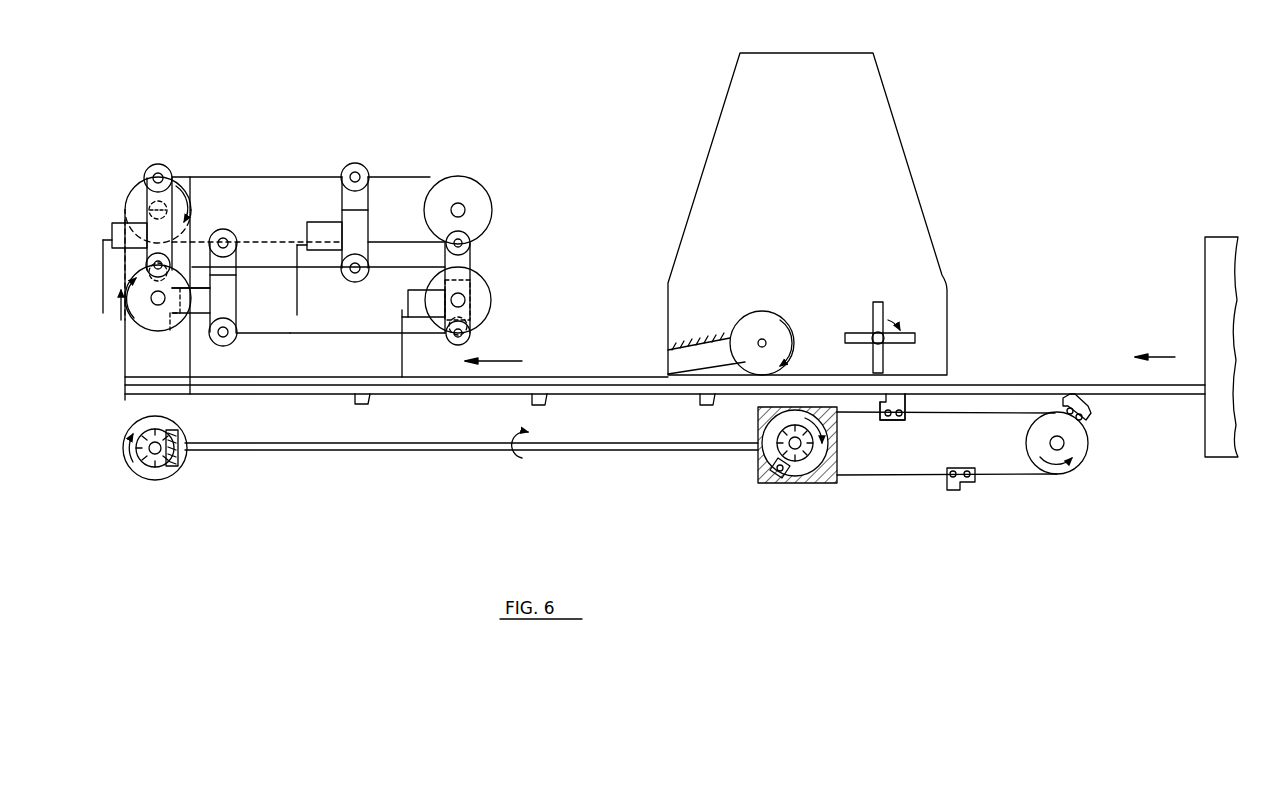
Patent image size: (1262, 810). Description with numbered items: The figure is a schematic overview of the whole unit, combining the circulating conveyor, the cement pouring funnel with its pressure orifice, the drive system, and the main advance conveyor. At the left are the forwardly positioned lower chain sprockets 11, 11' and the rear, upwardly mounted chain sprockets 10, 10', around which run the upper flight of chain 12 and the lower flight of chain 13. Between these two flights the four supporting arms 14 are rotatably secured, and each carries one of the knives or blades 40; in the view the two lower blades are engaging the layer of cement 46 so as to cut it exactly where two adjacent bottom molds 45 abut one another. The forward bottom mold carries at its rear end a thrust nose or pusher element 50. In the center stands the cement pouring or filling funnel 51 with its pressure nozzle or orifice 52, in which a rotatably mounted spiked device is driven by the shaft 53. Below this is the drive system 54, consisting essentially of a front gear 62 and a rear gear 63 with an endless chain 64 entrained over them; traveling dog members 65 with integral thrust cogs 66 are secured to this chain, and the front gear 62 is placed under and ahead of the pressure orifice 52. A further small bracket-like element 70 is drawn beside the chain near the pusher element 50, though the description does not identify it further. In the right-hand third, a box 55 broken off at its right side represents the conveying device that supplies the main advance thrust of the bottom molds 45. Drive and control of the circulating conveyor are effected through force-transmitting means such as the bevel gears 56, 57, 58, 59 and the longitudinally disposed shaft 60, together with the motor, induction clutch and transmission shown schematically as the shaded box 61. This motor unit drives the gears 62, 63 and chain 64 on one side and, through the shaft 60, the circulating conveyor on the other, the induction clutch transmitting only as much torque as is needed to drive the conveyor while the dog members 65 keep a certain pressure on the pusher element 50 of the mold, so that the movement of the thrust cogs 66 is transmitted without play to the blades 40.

The rear upwardly mounted chain sprocket 10 is at (165, 214).
The rear upwardly mounted chain sprocket 10' is at (487, 226).
The forwardly positioned lower chain sprocket 11 is at (167, 307).
The forwardly positioned lower chain sprocket 11' is at (439, 303).
The upper flight of chain 12 is at (280, 172).
The lower flight of chain 13 is at (355, 336).
The supporting arm 14 is at (237, 302).
The knife or blade 40 is at (170, 368).
The bottom mold 45 is at (603, 392).
The layer of cement 46 is at (540, 381).
The thrust nose or pusher element 50 is at (370, 405).
The cement pouring or filling funnel 51 is at (898, 130).
The pressure nozzle or orifice 52 is at (675, 362).
The shaft 53 is at (873, 330).
The drive system 54 is at (910, 484).
The box 55 is at (1218, 292).
The bevel gear 56 is at (158, 458).
The bevel gear 57 is at (180, 460).
The bevel gear 58 is at (790, 480).
The bevel gear 59 is at (828, 486).
The longitudinally disposed shaft 60 is at (292, 454).
The motor, clutch and transmission 61 is at (803, 484).
The front gear 62 is at (765, 465).
The rear gear 63 is at (1057, 486).
The endless chain 64 is at (938, 478).
The traveling dog member 65 is at (1062, 375).
The thrust cog 66 is at (1095, 414).
The bracket 70 is at (905, 422).